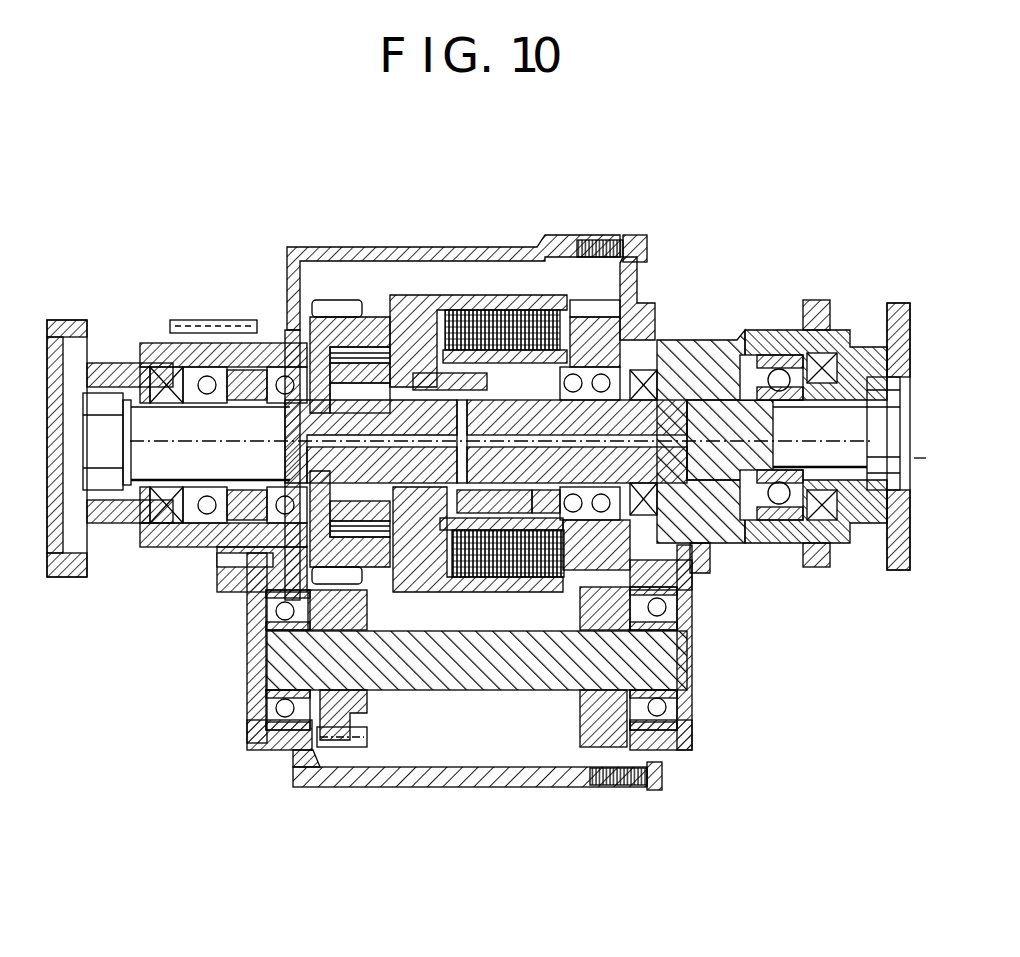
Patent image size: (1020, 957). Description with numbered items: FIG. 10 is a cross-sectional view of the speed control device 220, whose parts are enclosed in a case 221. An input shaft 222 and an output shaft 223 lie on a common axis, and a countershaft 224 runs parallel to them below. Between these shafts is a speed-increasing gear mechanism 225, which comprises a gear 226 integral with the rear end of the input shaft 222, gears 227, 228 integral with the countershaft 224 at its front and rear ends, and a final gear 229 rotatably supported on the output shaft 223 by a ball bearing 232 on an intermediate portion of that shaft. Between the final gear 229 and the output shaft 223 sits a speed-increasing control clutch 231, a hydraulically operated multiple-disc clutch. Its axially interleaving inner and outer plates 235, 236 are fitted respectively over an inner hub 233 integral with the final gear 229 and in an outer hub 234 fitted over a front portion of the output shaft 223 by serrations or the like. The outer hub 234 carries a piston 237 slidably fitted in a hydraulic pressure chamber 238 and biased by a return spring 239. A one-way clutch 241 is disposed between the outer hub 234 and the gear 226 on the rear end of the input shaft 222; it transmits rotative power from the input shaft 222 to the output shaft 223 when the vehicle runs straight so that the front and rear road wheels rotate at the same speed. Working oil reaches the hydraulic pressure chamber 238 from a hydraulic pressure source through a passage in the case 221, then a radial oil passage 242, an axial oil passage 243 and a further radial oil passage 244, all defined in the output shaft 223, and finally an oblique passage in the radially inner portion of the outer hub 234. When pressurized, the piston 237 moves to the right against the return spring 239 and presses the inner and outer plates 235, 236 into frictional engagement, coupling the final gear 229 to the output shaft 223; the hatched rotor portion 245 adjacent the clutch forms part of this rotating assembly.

The rotary actuator assembly 220 is at (651, 168).
The case 221 is at (407, 778).
The input shaft 222 is at (190, 540).
The output shaft 223 is at (720, 407).
The countershaft 224 is at (478, 670).
The speed-increasing gear mechanism 225 is at (478, 753).
The gear 226 is at (330, 247).
The gear 227 is at (345, 745).
The gear 228 is at (603, 788).
The final gear 229 is at (588, 300).
The speed-increasing control clutch 231 is at (472, 273).
The ball bearing 232 is at (628, 357).
The inner hub 233 is at (497, 490).
The outer hub 234 is at (440, 297).
The inner plates 235 is at (520, 297).
The outer plates 236 is at (503, 592).
The piston 237 is at (443, 593).
The hydraulic pressure chamber 238 is at (400, 593).
The return spring 239 is at (577, 417).
The one-way clutch 241 is at (368, 322).
The radial oil passage 242 is at (694, 470).
The axial oil passage 243 is at (567, 438).
The radial oil passage 244 is at (455, 455).
The rotor 245 is at (371, 441).